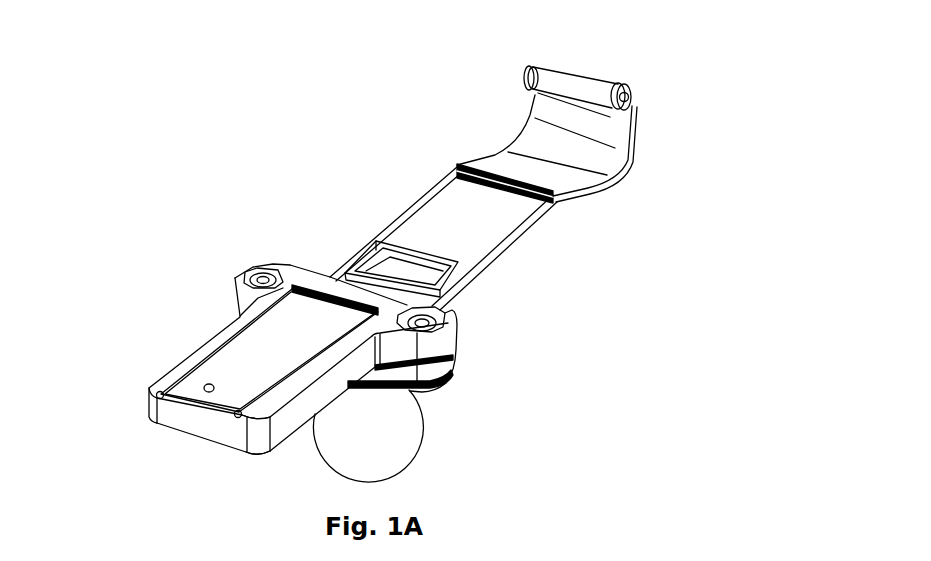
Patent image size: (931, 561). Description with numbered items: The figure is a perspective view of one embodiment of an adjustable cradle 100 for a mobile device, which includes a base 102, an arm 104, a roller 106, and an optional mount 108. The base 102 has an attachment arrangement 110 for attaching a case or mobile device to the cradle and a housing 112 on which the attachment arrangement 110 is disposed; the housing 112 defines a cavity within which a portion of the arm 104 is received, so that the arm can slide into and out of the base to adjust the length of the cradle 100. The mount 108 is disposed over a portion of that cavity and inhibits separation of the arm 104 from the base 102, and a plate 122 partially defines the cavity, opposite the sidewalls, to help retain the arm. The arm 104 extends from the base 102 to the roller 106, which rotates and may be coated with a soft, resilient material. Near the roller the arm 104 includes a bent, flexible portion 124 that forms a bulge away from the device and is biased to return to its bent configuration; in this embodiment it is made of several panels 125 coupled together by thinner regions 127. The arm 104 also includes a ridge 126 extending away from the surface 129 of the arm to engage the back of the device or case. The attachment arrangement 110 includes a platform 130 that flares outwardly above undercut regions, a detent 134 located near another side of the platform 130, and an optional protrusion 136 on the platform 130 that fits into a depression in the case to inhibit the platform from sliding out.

The adjustable cradle 100 is at (281, 94).
The base 102 is at (207, 437).
The arm 104 is at (504, 249).
The roller 106 is at (582, 80).
The mount 108 is at (420, 433).
The attachment arrangement 110 is at (230, 350).
The housing 112 is at (267, 440).
The plate 122 is at (298, 275).
The bent, flexible portion 124 is at (599, 200).
The panels 125 is at (487, 155).
The ridge 126 is at (455, 172).
The thinner regions 127 is at (545, 143).
The surface of the arm 129 is at (467, 231).
The platform 130 is at (192, 372).
The detent 134 is at (330, 291).
The protrusion 136 is at (205, 392).